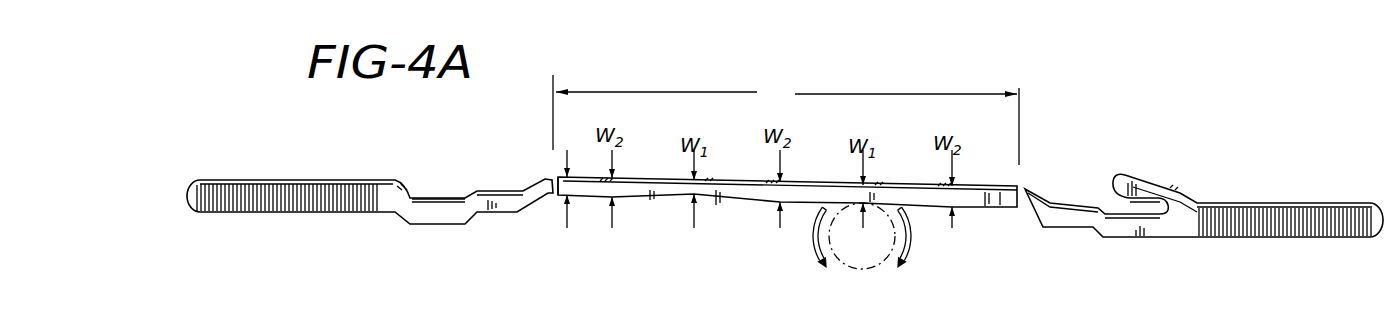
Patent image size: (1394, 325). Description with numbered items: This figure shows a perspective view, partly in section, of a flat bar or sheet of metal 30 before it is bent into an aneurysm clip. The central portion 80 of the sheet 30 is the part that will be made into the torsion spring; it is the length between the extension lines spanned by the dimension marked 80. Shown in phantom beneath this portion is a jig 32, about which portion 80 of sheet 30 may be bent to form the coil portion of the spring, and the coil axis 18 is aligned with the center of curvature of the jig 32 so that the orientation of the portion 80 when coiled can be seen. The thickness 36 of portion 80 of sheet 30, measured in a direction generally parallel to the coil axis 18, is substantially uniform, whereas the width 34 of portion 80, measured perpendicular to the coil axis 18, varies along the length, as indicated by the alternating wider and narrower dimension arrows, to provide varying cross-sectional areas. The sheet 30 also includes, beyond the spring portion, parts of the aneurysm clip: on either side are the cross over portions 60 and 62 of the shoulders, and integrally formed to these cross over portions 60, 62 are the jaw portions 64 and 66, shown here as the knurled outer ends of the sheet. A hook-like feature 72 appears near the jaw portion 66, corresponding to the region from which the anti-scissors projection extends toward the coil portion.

The coil axis 18 is at (862, 237).
The flat bar or sheet of metal 30 is at (705, 240).
The jig 32 is at (843, 263).
The width 34 is at (570, 188).
The thickness 36 is at (388, 235).
The cross over portion 60 is at (442, 215).
The cross over portion 62 is at (1128, 230).
The jaw portion 64 is at (293, 214).
The jaw portion 66 is at (1298, 233).
The hook 72 is at (1145, 188).
The portion of sheet 80 is at (786, 120).